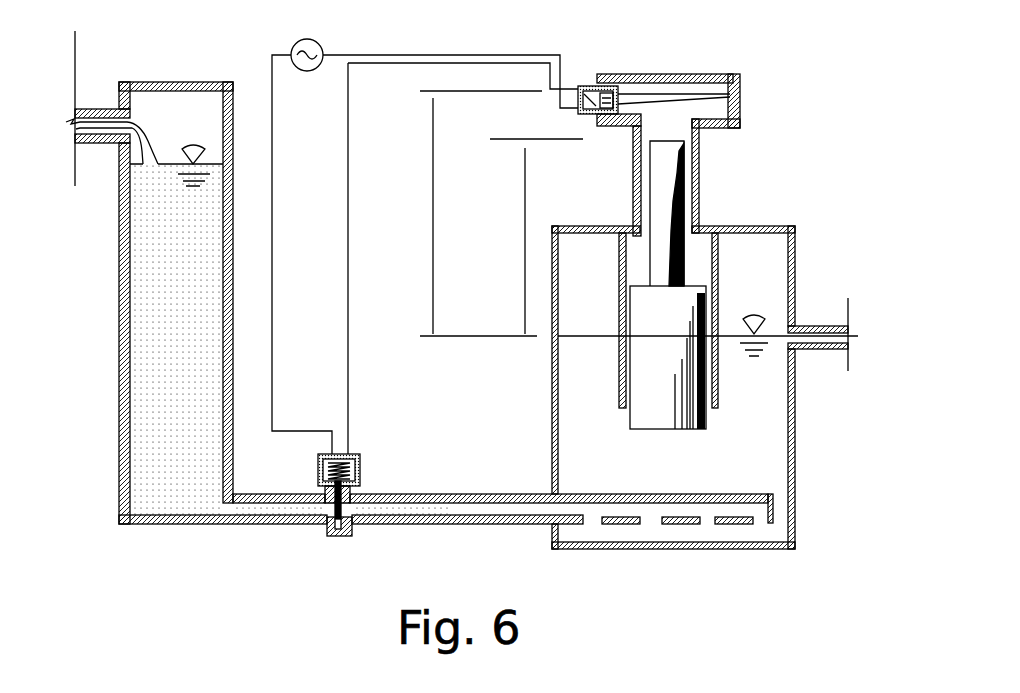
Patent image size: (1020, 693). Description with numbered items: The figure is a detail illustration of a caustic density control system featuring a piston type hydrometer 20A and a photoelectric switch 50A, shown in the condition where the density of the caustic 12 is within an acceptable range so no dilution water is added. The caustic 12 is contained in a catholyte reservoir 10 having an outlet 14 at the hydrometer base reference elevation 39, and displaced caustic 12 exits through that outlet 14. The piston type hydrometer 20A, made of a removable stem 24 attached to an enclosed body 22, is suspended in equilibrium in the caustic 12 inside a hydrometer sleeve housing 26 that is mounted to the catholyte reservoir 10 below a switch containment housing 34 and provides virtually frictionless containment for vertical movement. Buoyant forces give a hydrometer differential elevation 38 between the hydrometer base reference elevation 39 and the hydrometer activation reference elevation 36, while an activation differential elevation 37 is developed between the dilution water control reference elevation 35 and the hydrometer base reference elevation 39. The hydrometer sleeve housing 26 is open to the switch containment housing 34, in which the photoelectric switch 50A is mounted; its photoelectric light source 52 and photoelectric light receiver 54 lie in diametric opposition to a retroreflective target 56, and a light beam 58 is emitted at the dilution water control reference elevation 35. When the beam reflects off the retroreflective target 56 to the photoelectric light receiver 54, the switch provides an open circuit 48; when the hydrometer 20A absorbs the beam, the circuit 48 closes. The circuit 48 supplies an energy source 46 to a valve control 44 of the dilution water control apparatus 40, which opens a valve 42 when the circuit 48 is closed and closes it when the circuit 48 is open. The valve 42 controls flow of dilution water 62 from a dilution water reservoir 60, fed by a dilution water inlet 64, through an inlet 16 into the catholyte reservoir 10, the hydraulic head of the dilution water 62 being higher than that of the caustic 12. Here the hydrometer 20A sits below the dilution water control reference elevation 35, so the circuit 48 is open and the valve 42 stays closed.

The catholyte reservoir 10 is at (552, 448).
The caustic 12 is at (600, 432).
The outlet 14 is at (828, 322).
The inlet 16 is at (775, 510).
The piston type hydrometer 20A is at (695, 185).
The enclosed body 22 is at (660, 363).
The removable stem 24 is at (750, 227).
The hydrometer sleeve housing 26 is at (717, 392).
The switch containment housing 34 is at (665, 72).
The dilution water control reference elevation 35 is at (461, 93).
The hydrometer activation reference elevation 36 is at (516, 140).
The activation differential elevation 37 is at (432, 210).
The hydrometer differential elevation 38 is at (523, 245).
The hydrometer base reference elevation 39 is at (458, 341).
The dilution water control apparatus 40 is at (313, 372).
The valve 42 is at (330, 520).
The valve control 44 is at (362, 465).
The energy source 46 is at (292, 42).
The circuit 48 is at (348, 240).
The photoelectric switch 50A is at (582, 82).
The photoelectric light source 52 is at (608, 83).
The photoelectric light receiver 54 is at (607, 130).
The retroreflective target 56 is at (740, 107).
The light beam 58 is at (707, 92).
The dilution water reservoir 60 is at (122, 320).
The dilution water 62 is at (172, 337).
The dilution water inlet 64 is at (95, 107).